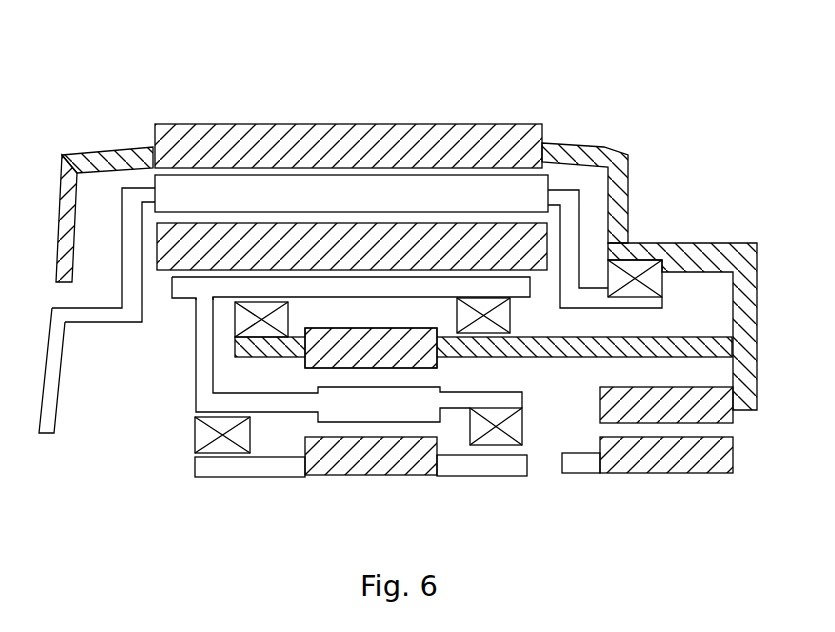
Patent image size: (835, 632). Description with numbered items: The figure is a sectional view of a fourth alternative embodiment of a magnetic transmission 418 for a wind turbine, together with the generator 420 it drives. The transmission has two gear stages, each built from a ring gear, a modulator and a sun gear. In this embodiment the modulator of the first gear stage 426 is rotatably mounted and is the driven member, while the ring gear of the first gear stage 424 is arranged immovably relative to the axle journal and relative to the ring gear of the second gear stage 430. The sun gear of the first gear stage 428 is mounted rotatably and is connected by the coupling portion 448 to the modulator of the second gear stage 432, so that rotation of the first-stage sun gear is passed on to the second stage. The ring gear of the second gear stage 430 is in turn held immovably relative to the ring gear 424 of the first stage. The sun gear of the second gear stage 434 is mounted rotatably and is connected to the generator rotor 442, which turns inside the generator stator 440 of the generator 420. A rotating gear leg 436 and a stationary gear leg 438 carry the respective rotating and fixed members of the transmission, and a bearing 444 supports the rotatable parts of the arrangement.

The magnetic transmission 418 is at (663, 177).
The generator 420 is at (717, 487).
The ring gear of the first gear stage 424 is at (163, 123).
The modulator of the first gear stage 426 is at (200, 185).
The sun gear of the first gear stage 428 is at (272, 222).
The ring gear of the second gear stage 430 is at (413, 326).
The modulator of the second gear stage 432 is at (333, 412).
The sun gear of the second gear stage 434 is at (407, 458).
The gear leg rotating 436 is at (572, 200).
The gear leg stationary 438 is at (85, 157).
The generator stator 440 is at (656, 392).
The generator rotor 442 is at (668, 453).
The bearing 444 is at (74, 302).
The coupling portion 448 is at (322, 288).